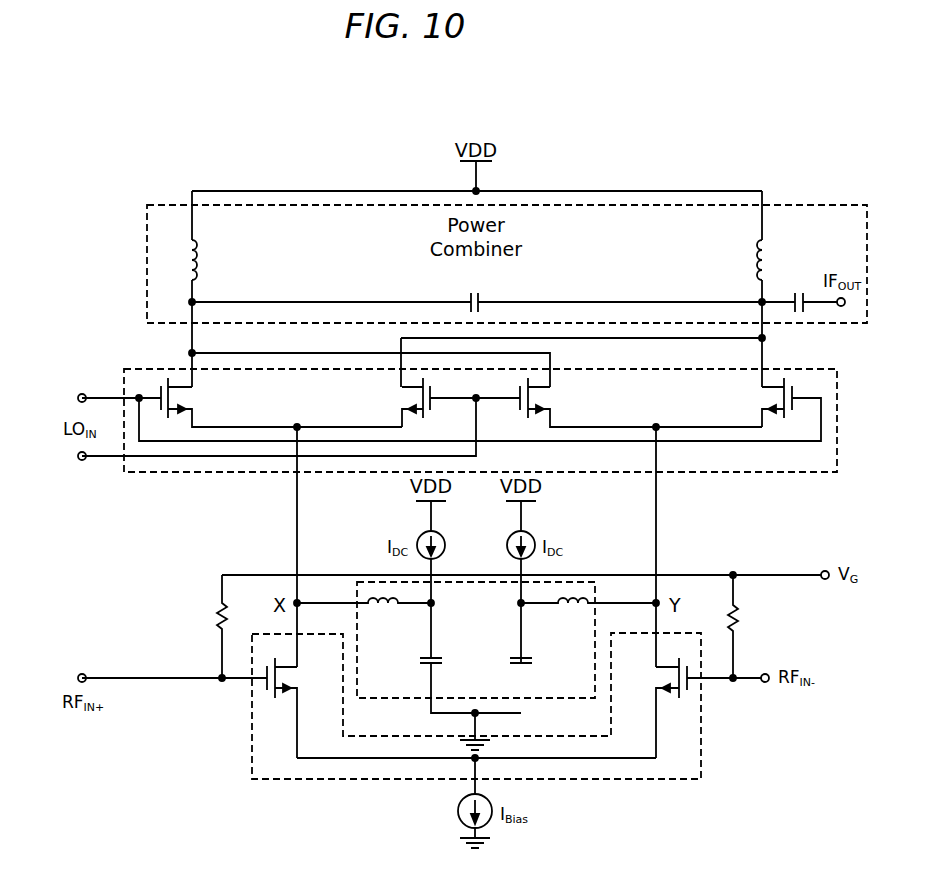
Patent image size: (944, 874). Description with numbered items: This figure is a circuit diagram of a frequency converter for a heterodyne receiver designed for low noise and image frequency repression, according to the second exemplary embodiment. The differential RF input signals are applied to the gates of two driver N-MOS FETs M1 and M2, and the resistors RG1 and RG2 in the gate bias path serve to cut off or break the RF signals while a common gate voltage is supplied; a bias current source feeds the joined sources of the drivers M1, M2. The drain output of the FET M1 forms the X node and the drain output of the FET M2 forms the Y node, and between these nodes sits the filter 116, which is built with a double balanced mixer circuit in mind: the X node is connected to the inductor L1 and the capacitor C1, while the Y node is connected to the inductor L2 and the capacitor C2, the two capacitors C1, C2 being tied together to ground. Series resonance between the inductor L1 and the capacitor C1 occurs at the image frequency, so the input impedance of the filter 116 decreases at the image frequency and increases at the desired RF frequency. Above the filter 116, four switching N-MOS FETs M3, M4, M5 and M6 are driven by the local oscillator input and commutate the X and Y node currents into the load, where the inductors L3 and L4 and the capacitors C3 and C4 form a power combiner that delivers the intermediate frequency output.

The filter 116 is at (476, 714).
The N-MOS FET of drive M1 is at (299, 708).
The N-MOS FET of drive M2 is at (653, 708).
The N-MOS FET of switch M3 is at (281, 402).
The N-MOS FET of switch M4 is at (399, 402).
The N-MOS FET of switch M5 is at (641, 402).
The N-MOS FET of switch M6 is at (761, 402).
The inductor L1 is at (364, 617).
The inductor L2 is at (588, 617).
The inductor L3 is at (211, 260).
The inductor L4 is at (745, 260).
The capacitor C1 is at (417, 661).
The capacitor C2 is at (535, 661).
The capacitor C3 is at (475, 288).
The capacitor C4 is at (799, 289).
The resistor RG1 is at (205, 626).
The resistor RG2 is at (750, 626).